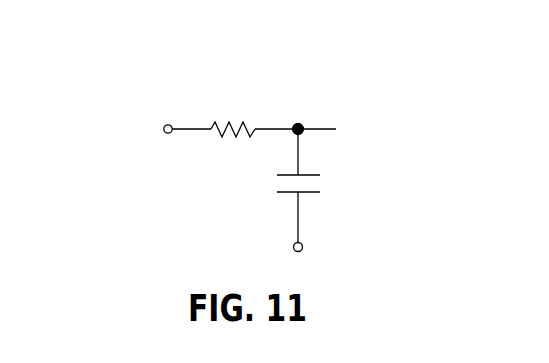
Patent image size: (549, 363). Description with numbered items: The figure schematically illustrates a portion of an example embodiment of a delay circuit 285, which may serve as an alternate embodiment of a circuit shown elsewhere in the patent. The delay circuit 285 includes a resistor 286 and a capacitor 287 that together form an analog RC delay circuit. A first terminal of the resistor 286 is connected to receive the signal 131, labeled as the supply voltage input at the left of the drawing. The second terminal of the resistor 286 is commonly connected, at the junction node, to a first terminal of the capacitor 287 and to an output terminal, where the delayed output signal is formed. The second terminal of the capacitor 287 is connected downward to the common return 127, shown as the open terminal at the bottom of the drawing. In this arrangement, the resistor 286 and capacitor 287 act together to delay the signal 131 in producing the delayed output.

The delay circuit 285 is at (78, 84).
The signal 131 is at (171, 125).
The resistor 286 is at (236, 123).
The capacitor 287 is at (320, 184).
The common return 127 is at (303, 246).